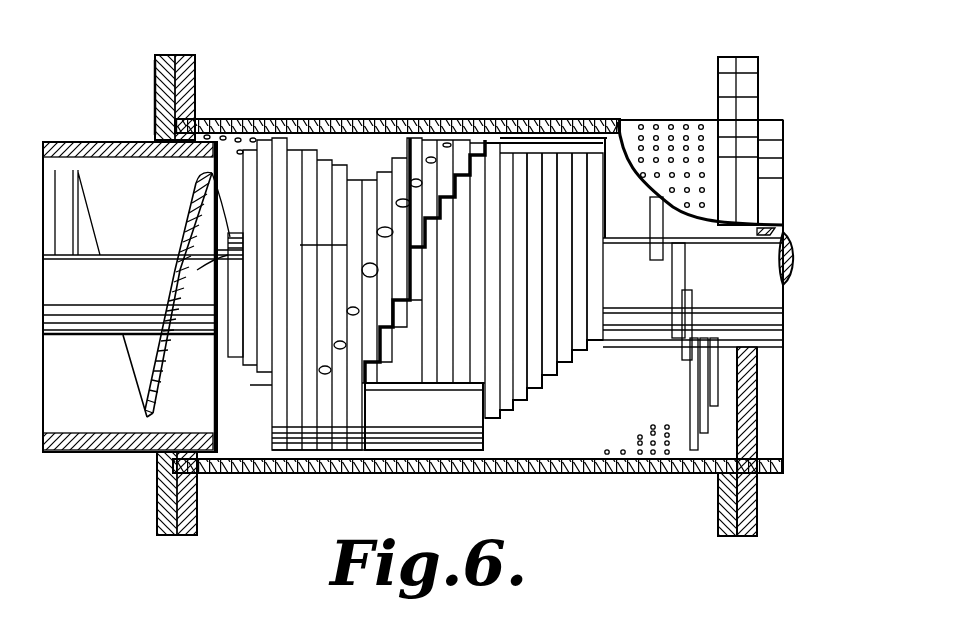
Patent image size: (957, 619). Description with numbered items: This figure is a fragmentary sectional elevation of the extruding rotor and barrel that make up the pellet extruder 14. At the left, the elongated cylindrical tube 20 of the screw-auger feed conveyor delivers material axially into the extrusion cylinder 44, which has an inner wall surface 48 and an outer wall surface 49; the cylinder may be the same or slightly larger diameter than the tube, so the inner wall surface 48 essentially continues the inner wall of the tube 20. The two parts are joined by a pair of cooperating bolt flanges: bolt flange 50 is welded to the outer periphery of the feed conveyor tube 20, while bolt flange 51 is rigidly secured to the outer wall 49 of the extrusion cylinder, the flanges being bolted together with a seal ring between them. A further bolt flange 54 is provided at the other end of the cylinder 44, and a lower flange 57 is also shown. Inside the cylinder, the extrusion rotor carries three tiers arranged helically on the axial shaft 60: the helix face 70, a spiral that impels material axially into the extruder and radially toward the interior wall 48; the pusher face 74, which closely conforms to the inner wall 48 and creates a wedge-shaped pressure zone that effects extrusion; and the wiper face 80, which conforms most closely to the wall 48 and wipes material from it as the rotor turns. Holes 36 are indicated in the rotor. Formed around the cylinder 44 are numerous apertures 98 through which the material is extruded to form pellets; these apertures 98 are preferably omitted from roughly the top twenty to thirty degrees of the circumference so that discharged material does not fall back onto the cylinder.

The pellet extruder 14 is at (468, 88).
The elongated cylindrical tube 20 is at (105, 452).
The holes 36 is at (305, 407).
The extrusion cylinder 44 is at (340, 120).
The inner wall surface 48 is at (192, 152).
The outer wall surface 49 is at (222, 128).
The bolt flange 50 is at (156, 80).
The bolt flange 51 is at (183, 55).
The bolt flange 54 is at (718, 68).
The lower flange 57 is at (752, 540).
The axial shaft 60 is at (792, 246).
The helix face 70 is at (552, 372).
The pusher face 74 is at (570, 143).
The wiper face 80 is at (290, 142).
The apertures 98 is at (505, 128).